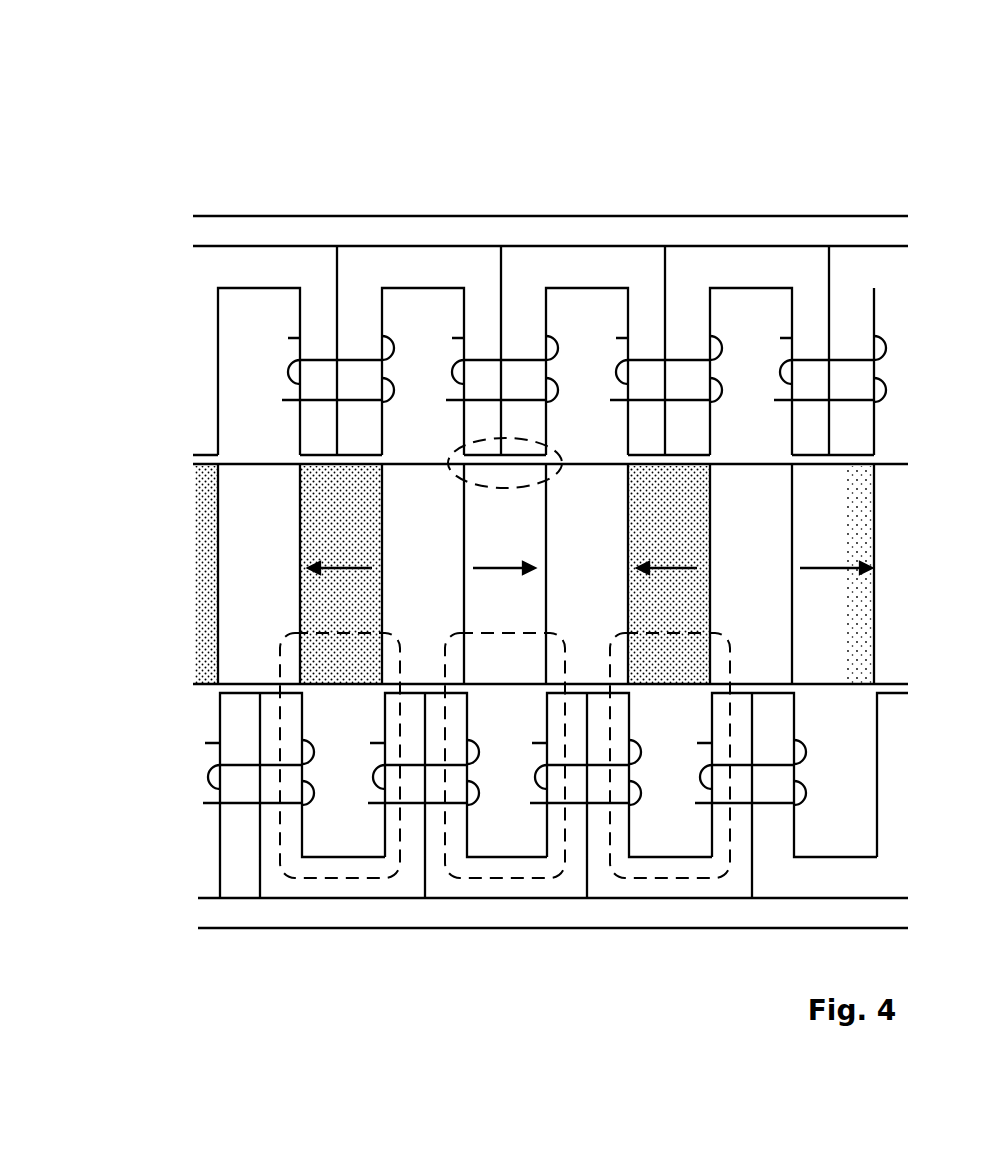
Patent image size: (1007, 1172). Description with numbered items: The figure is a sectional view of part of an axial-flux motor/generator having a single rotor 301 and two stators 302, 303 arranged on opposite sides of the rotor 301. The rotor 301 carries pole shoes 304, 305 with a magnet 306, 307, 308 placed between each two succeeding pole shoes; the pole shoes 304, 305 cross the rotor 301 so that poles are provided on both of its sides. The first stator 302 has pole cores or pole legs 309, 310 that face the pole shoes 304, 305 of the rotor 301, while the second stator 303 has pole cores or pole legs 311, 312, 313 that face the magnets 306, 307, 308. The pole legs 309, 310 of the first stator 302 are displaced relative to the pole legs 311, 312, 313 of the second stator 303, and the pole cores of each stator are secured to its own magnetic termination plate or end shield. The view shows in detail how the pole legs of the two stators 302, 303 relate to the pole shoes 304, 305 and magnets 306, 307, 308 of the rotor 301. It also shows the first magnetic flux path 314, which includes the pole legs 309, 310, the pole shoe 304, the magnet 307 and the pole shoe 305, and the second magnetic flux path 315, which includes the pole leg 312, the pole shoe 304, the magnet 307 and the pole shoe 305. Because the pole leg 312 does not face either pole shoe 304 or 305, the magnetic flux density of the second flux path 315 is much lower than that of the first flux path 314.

The rotor 301 is at (187, 575).
The first stator 302 is at (240, 910).
The second stator 303 is at (230, 268).
The pole shoe 304 is at (428, 522).
The pole shoe 305 is at (586, 527).
The magnet 306 is at (343, 513).
The magnet 307 is at (484, 555).
The magnet 308 is at (680, 528).
The pole leg 309 is at (432, 785).
The pole leg 310 is at (598, 783).
The pole leg 311 is at (357, 347).
The pole leg 312 is at (515, 335).
The pole leg 313 is at (687, 337).
The first magnetic flux path 314 is at (507, 883).
The second magnetic flux path 315 is at (528, 440).